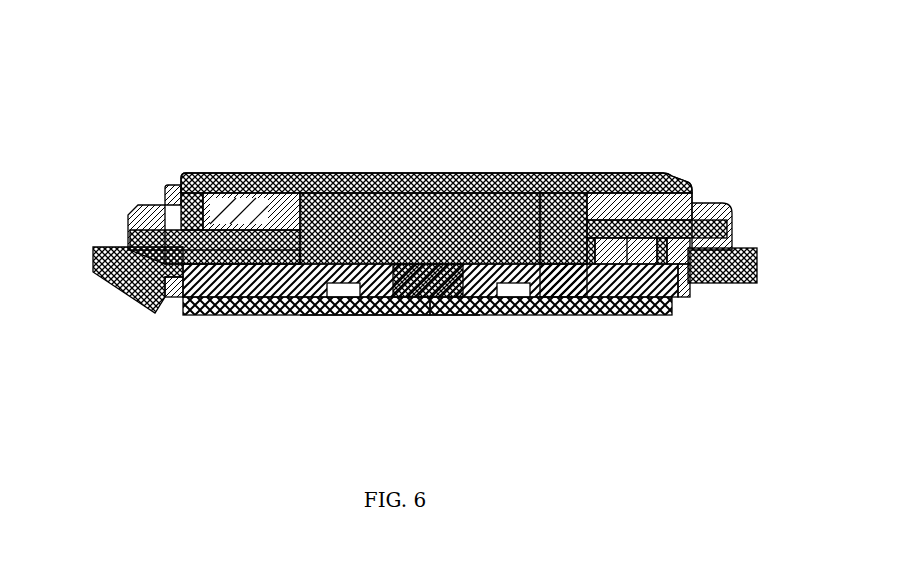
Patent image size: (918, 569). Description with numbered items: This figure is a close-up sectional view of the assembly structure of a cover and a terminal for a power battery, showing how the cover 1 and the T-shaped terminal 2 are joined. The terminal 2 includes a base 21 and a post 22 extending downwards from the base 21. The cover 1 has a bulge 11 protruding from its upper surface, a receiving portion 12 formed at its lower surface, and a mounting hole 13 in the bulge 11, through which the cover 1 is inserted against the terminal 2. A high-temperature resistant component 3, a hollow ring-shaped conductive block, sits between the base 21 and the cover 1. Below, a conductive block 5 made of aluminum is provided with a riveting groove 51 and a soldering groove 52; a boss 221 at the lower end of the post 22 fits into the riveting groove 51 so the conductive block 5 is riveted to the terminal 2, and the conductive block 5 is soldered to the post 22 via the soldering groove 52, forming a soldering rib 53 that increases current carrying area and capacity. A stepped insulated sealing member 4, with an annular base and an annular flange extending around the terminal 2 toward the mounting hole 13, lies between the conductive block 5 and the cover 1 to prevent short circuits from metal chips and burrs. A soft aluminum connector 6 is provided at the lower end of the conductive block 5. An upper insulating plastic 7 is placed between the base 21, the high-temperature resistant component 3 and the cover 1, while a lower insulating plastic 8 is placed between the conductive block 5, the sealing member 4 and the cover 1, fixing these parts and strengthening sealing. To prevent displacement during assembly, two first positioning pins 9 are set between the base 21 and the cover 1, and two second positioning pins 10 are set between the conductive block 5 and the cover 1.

The cover 1 is at (93, 267).
The terminal 2 is at (548, 98).
The base 21 is at (548, 315).
The post 22 is at (451, 300).
The boss 221 is at (432, 315).
The high-temperature resistant component 3 is at (299, 372).
The sealing member 4 is at (300, 315).
The conductive block 5 is at (214, 315).
The riveting groove 51 is at (390, 315).
The soldering groove 52 is at (503, 315).
The soldering rib 53 is at (342, 300).
The soft connector 6 is at (639, 315).
The upper insulating plastic 7 is at (720, 213).
The lower insulating plastic 8 is at (757, 282).
The first positioning pin 9 is at (229, 193).
The second positioning pin 10 is at (628, 238).
The bulge 11 is at (130, 228).
The receiving portion 12 is at (163, 205).
The mounting hole 13 is at (562, 315).